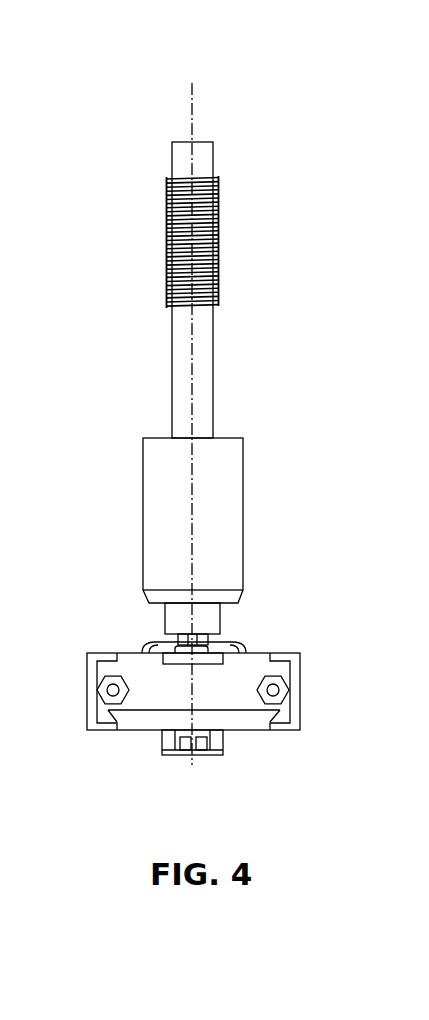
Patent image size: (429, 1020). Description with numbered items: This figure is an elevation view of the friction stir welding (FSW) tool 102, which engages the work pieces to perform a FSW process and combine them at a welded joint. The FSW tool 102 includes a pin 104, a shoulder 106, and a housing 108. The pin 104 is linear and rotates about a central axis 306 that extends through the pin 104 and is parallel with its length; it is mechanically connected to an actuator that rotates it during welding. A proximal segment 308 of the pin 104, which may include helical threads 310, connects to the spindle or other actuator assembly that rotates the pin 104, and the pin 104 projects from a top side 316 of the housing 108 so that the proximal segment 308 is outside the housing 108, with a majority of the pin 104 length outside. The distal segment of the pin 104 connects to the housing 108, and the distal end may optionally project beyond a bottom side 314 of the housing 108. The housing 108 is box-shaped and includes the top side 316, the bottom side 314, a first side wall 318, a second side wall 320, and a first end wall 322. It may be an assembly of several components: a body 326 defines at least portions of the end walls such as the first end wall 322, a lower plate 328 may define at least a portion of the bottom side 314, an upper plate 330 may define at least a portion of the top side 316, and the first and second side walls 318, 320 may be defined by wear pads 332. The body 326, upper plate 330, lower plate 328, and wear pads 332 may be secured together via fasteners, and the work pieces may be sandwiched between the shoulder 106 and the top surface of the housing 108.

The FSW tool 102 is at (66, 187).
The pin 104 is at (202, 333).
The shoulder 106 is at (143, 498).
The housing 108 is at (208, 674).
The central axis 306 is at (192, 90).
The proximal segment 308 is at (207, 225).
The helical threads 310 is at (167, 232).
The bottom side 314 is at (247, 775).
The top side 316 is at (243, 688).
The first side wall 318 is at (87, 707).
The second side wall 320 is at (300, 702).
The first end wall 322 is at (152, 690).
The body 326 is at (262, 653).
The lower plate 328 is at (228, 717).
The upper plate 330 is at (155, 652).
The wear pads 332 is at (87, 680).